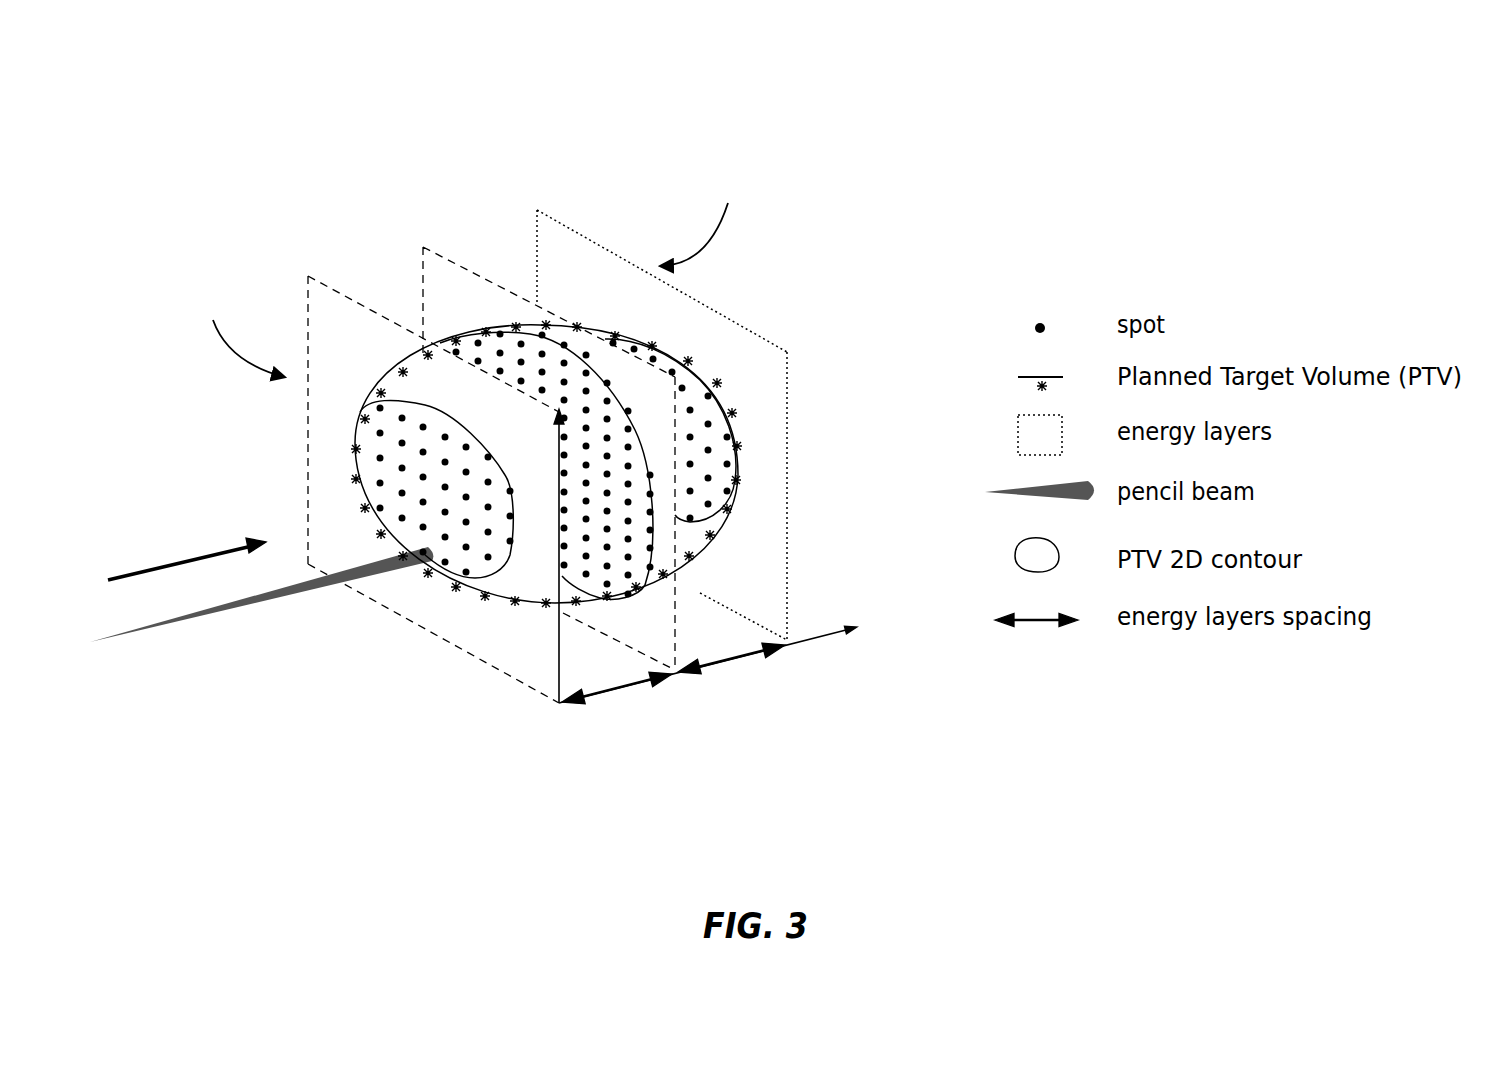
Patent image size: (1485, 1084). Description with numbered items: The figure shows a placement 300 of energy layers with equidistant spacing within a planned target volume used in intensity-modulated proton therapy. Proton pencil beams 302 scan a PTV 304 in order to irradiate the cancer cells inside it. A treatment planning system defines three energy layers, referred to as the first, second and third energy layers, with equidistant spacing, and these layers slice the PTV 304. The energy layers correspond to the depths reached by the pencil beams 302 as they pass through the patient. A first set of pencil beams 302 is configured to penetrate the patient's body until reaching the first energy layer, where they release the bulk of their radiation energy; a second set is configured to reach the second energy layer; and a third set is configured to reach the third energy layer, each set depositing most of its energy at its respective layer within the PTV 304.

The placement of energy layers 300 is at (287, 134).
The proton pencil beam 302 is at (287, 590).
The planned target volume (PTV) 304 is at (397, 357).